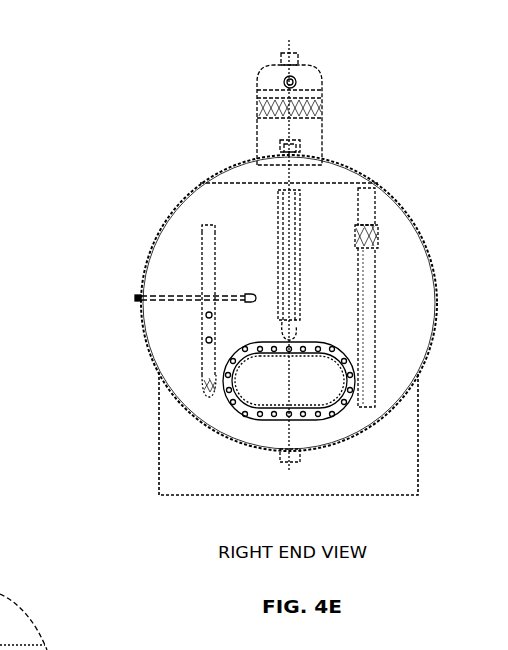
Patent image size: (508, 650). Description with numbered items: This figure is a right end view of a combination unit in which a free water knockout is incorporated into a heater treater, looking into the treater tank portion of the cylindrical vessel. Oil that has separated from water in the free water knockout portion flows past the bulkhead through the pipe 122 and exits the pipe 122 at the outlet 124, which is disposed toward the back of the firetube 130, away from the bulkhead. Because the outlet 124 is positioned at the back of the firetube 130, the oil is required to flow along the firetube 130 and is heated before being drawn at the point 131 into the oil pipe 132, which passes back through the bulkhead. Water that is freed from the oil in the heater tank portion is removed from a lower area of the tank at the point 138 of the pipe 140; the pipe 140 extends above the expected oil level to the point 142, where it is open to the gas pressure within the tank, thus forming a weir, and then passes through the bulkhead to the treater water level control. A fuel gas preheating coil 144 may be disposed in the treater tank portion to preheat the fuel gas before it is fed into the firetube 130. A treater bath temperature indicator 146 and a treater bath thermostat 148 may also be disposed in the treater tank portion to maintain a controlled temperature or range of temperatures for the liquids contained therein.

The pipe 122 is at (300, 210).
The outlet 124 is at (293, 333).
The firetube 130 is at (263, 385).
The point 131 is at (203, 225).
The oil pipe 132 is at (210, 250).
The point 138 is at (372, 405).
The pipe 140 is at (365, 293).
The point 142 is at (367, 202).
The fuel gas preheating coil 144 is at (135, 298).
The treater bath temperature indicator 146 is at (205, 318).
The treater bath thermostat 148 is at (206, 343).